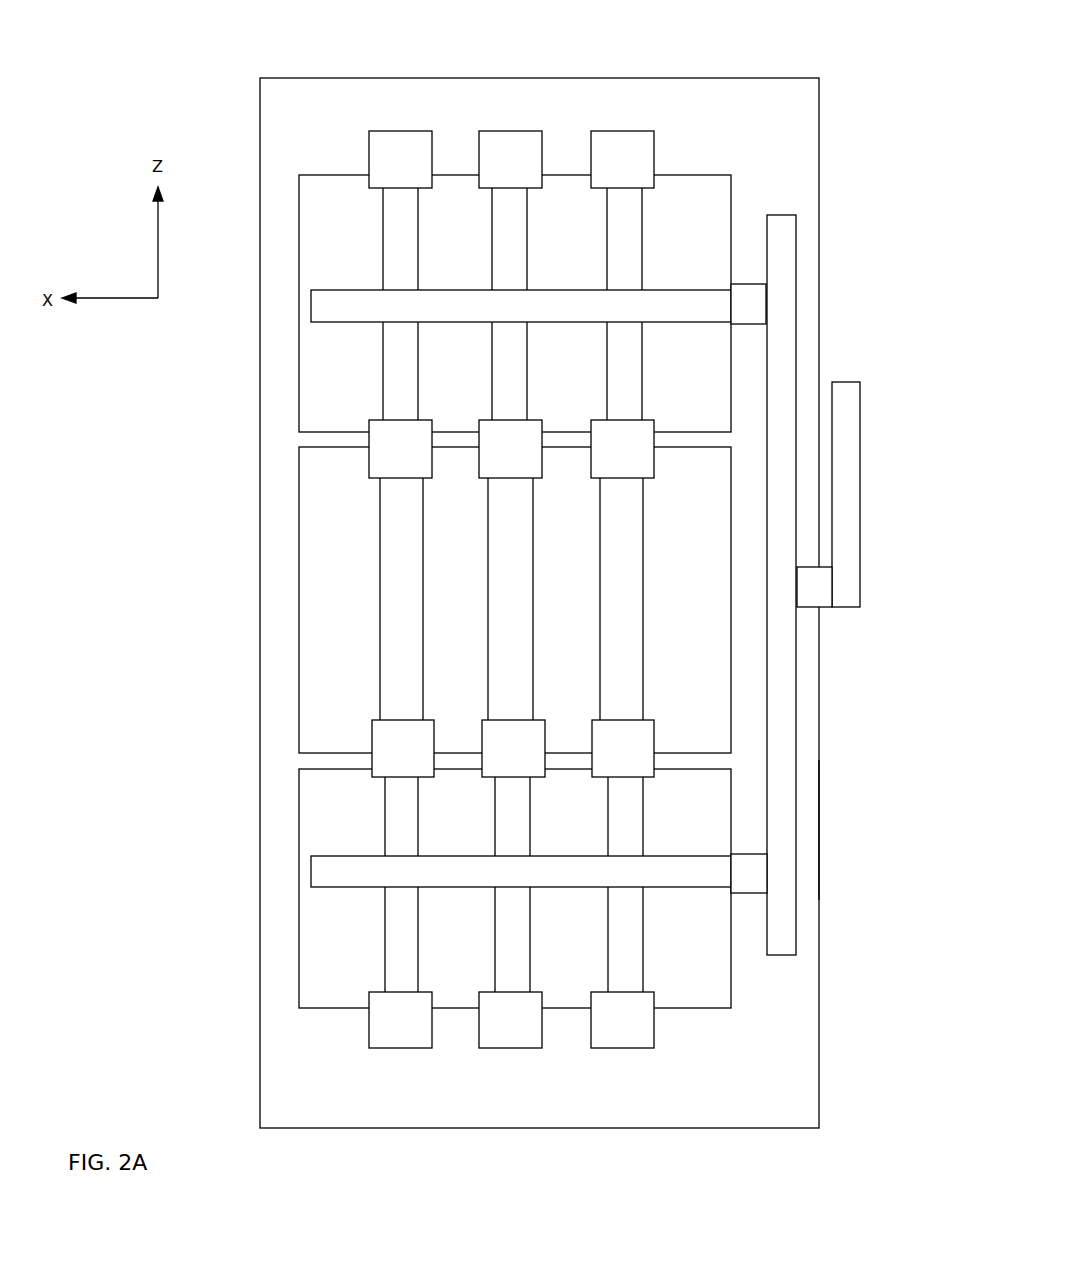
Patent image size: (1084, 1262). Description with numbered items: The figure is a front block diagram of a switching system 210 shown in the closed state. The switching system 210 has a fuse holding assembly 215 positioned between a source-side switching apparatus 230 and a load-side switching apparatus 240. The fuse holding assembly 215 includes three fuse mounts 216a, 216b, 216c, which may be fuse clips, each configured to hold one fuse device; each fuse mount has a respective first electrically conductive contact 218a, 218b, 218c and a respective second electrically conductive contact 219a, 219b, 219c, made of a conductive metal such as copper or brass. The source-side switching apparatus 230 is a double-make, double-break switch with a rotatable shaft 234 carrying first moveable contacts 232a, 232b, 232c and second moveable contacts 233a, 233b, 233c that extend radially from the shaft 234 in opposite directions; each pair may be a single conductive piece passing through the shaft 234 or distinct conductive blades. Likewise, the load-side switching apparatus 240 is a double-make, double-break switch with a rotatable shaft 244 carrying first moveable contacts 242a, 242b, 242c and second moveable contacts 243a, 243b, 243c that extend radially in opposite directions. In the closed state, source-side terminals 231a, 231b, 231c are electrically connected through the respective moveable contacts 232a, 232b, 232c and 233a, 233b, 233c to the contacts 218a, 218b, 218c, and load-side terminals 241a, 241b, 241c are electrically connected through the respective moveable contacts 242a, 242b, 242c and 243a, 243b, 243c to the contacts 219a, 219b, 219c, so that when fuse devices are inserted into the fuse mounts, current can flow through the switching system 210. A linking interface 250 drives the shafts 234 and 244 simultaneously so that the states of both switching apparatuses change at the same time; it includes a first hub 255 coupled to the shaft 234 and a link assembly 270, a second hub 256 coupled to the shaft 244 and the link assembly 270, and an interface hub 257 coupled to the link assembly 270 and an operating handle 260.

The switching system 210 is at (539, 573).
The source-side switching apparatus 230 is at (338, 200).
The fuse holding assembly 215 is at (338, 476).
The load-side switching apparatus 240 is at (338, 799).
The source-side terminal 231a is at (400, 159).
The source-side terminal 231b is at (510, 159).
The source-side terminal 231c is at (622, 159).
The first moveable contact 232a is at (400, 252).
The first moveable contact 232b is at (508, 202).
The first moveable contact 232c is at (618, 211).
The second moveable contact 233a is at (393, 371).
The second moveable contact 233b is at (513, 353).
The second moveable contact 233c is at (625, 353).
The rotatable shaft 234 is at (521, 306).
The first electrically conductive contact 218a is at (400, 449).
The first electrically conductive contact 218b is at (510, 449).
The first electrically conductive contact 218c is at (622, 449).
The fuse mount 216a is at (400, 562).
The fuse mount 216b is at (513, 558).
The fuse mount 216c is at (622, 632).
The second electrically conductive contact 219a is at (403, 748).
The second electrically conductive contact 219b is at (513, 748).
The second electrically conductive contact 219c is at (623, 748).
The first moveable contact 242a is at (407, 830).
The first moveable contact 242b is at (505, 803).
The first moveable contact 242c is at (628, 813).
The second moveable contact 243a is at (403, 972).
The second moveable contact 243b is at (512, 902).
The second moveable contact 243c is at (625, 920).
The rotatable shaft 244 is at (521, 871).
The load-side terminal 241a is at (400, 1020).
The load-side terminal 241b is at (510, 1020).
The load-side terminal 241c is at (622, 1020).
The linking interface 250 is at (808, 339).
The first hub 255 is at (747, 305).
The second hub 256 is at (744, 866).
The interface hub 257 is at (808, 588).
The operating handle 260 is at (845, 461).
The link assembly 270 is at (785, 782).